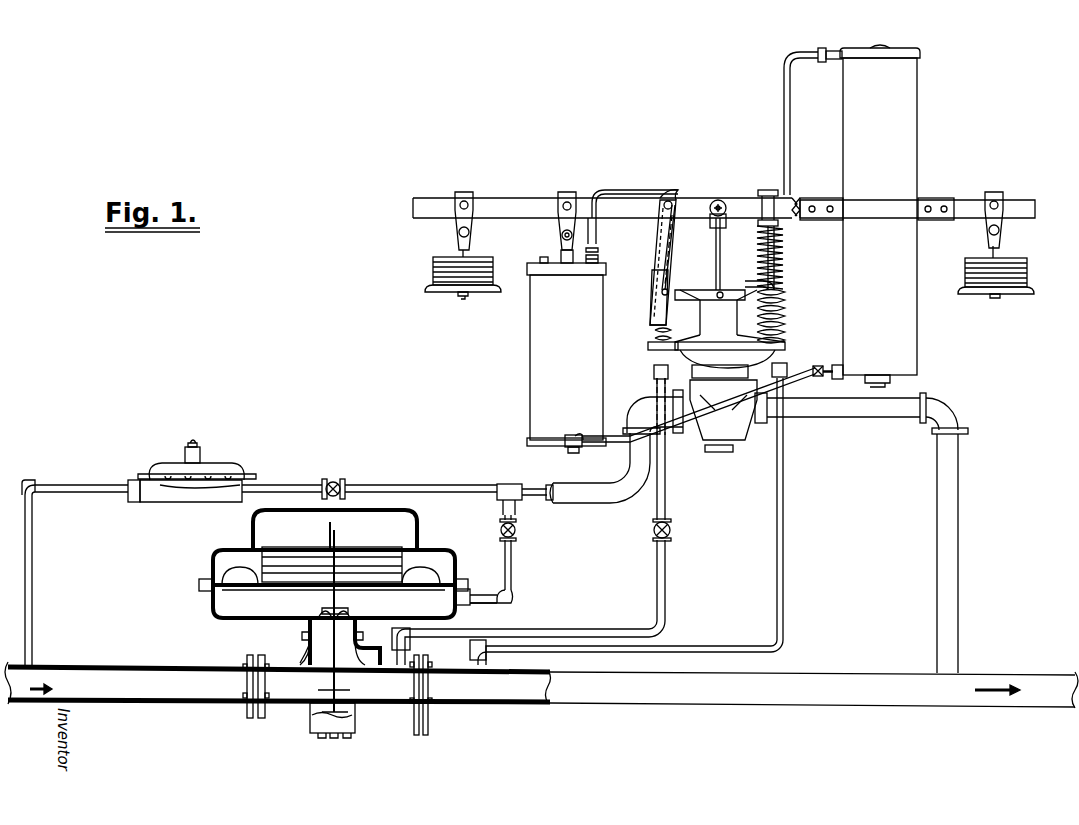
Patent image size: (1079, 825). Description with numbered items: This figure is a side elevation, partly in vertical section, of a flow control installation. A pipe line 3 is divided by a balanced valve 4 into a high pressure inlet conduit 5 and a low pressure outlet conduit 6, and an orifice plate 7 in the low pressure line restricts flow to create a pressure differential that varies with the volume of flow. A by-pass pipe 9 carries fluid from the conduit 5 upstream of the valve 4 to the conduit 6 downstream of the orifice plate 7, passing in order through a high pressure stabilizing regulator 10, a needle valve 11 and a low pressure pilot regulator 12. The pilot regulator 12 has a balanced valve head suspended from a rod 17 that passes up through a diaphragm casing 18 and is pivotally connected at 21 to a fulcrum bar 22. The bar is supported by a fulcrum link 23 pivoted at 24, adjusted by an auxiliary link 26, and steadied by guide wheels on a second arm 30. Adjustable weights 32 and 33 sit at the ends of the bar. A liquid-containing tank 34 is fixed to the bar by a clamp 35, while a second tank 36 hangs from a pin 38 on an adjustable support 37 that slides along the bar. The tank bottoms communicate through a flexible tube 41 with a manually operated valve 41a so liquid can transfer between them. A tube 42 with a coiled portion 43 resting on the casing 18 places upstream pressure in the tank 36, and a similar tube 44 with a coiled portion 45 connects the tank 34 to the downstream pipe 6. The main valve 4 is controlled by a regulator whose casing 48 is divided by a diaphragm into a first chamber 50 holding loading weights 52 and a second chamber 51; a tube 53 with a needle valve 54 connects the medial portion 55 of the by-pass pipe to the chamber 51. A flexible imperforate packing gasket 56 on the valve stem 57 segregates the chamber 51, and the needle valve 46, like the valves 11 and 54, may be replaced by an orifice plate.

The pipe line 3 is at (98, 660).
The balanced valve 4 is at (352, 712).
The inlet or high pressure conduit 5 is at (192, 702).
The outlet or low pressure conduit 6 is at (808, 702).
The orifice plate 7 is at (435, 704).
The by-pass pipe 9 is at (76, 486).
The high pressure stabilizing regulator 10 is at (225, 468).
The needle valve 11 is at (336, 480).
The low pressure pilot regulator 12 is at (738, 440).
The rod 17 is at (722, 268).
The diaphragm casing 18 is at (640, 370).
The pivotal connection 21 is at (718, 200).
The fulcrum bar 22 is at (510, 206).
The fulcrum link 23 is at (658, 238).
The pivot 24 is at (672, 290).
The auxiliary link 26 is at (651, 266).
The second arm 30 is at (786, 252).
The adjustable weight 32 is at (433, 262).
The adjustable weight 33 is at (1025, 266).
The liquid-containing tank 34 is at (905, 153).
The clamp 35 is at (912, 216).
The liquid-containing tank 36 is at (531, 343).
The adjustable support 37 is at (560, 195).
The pin 38 is at (561, 234).
The flexible tube 41 is at (785, 382).
The manually operated valve 41a is at (818, 366).
The tube 42 is at (666, 575).
The coiled portion 43 is at (681, 198).
The tube 44 is at (786, 145).
The coiled portion 45 is at (787, 305).
The needle valve 46 is at (672, 525).
The casing 48 is at (213, 603).
The first chamber 50 is at (405, 535).
The second chamber 51 is at (248, 606).
The weights 52 is at (290, 562).
The tube 53 is at (510, 576).
The needle valve 54 is at (517, 531).
The medial portion of the by-pass pipe 55 is at (547, 490).
The flexible imperforate packing gasket 56 is at (352, 606).
The stem 57 is at (310, 646).